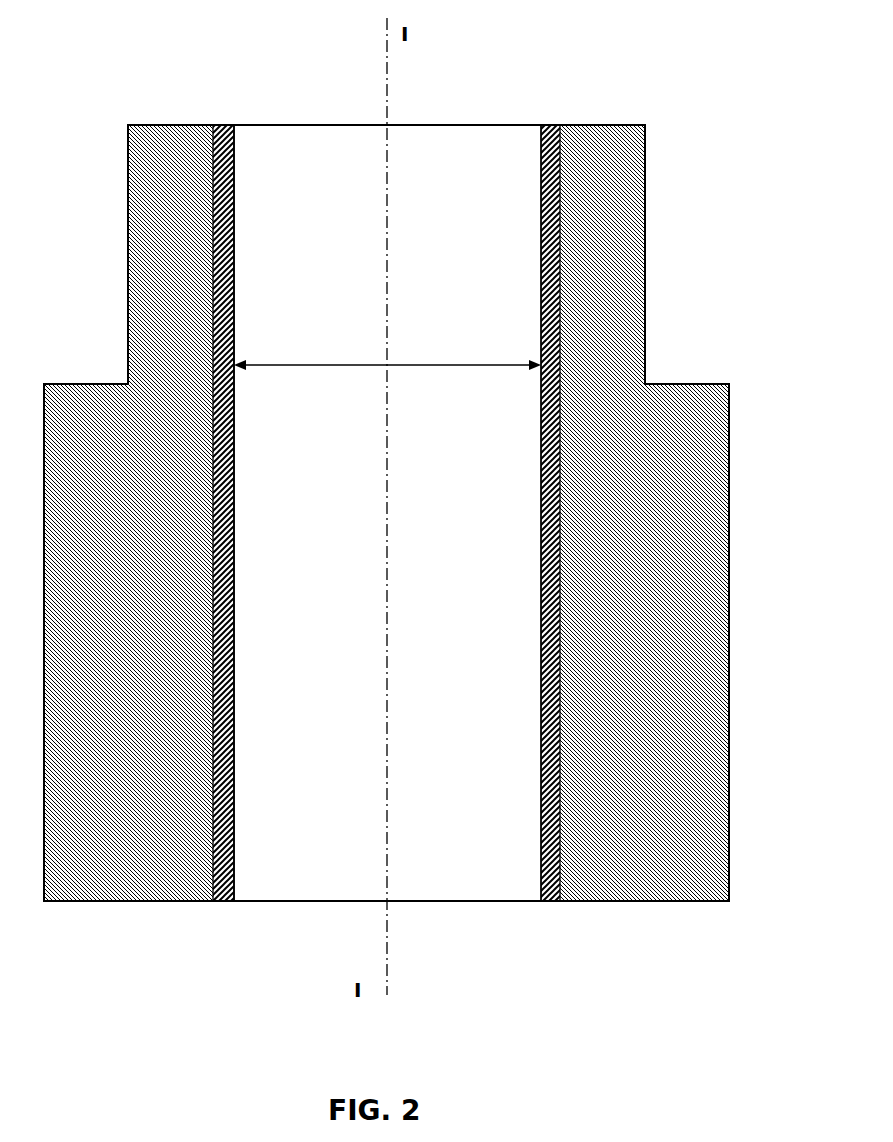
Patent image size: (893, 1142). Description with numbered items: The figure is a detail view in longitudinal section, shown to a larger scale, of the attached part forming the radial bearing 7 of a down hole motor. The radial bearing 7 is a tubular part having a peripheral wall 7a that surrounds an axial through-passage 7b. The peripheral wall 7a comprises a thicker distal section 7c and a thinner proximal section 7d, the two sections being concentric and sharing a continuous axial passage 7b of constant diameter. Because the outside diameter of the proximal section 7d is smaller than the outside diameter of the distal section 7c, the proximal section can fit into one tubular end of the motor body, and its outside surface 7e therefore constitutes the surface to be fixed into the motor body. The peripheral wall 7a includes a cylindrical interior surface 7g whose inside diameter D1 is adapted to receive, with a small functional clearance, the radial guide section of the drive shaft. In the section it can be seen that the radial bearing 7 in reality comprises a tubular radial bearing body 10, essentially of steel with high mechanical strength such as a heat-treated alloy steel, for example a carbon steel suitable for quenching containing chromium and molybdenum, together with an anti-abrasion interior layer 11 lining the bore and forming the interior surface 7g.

The radial bearing 7 is at (86, 291).
The peripheral wall 7a is at (688, 424).
The axial through-passage 7b is at (456, 131).
The distal section 7c is at (697, 580).
The proximal section 7d is at (627, 190).
The outside surface 7e is at (637, 325).
The cylindrical interior surface 7g is at (226, 160).
The radial bearing body 10 is at (146, 865).
The anti-abrasion interior layer 11 is at (213, 790).
The inside diameter D1 is at (355, 356).